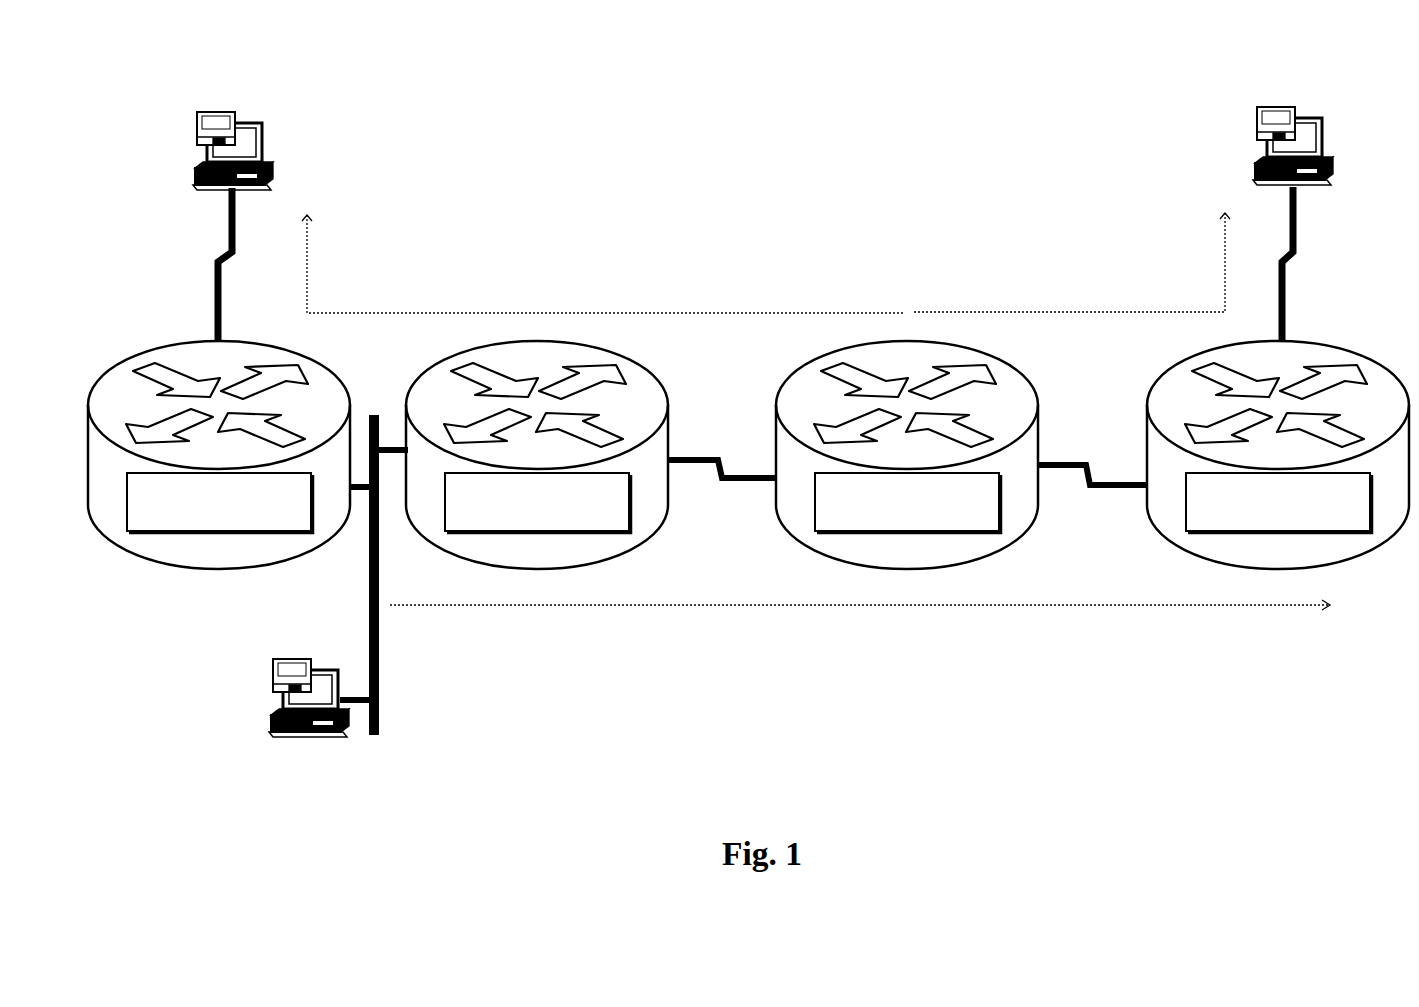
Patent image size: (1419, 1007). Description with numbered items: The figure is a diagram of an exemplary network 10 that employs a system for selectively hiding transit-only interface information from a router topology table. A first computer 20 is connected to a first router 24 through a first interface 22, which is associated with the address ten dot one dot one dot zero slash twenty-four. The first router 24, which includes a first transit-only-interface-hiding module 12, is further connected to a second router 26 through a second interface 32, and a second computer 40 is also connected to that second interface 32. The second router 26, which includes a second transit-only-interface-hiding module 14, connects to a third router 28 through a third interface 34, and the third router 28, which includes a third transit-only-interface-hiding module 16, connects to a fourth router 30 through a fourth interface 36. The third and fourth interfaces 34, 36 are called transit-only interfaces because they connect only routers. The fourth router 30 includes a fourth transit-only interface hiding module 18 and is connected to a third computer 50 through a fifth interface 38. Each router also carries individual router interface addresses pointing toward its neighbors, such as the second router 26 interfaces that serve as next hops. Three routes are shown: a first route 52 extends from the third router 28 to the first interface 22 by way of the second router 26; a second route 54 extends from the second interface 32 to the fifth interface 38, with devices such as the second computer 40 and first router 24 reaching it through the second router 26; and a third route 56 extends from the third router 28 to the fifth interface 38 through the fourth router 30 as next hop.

The network 10 is at (722, 86).
The first transit-only-interface-hiding module 12 is at (126, 487).
The second transit-only-interface-hiding module 14 is at (580, 476).
The third transit-only-interface-hiding module 16 is at (950, 476).
The fourth transit-only interface hiding module 18 is at (1370, 485).
The first computer 20 is at (262, 131).
The first interface 22 is at (228, 220).
The first router 24 is at (326, 354).
The second router 26 is at (650, 362).
The third router 28 is at (1003, 354).
The fourth router 30 is at (1363, 352).
The second interface 32 is at (376, 413).
The third interface 34 is at (710, 456).
The fourth interface 36 is at (1080, 463).
The fifth interface 38 is at (1290, 212).
The second computer 40 is at (273, 716).
The third computer 50 is at (1323, 130).
The first route 52 is at (309, 226).
The second route 54 is at (677, 609).
The third route 56 is at (1224, 254).